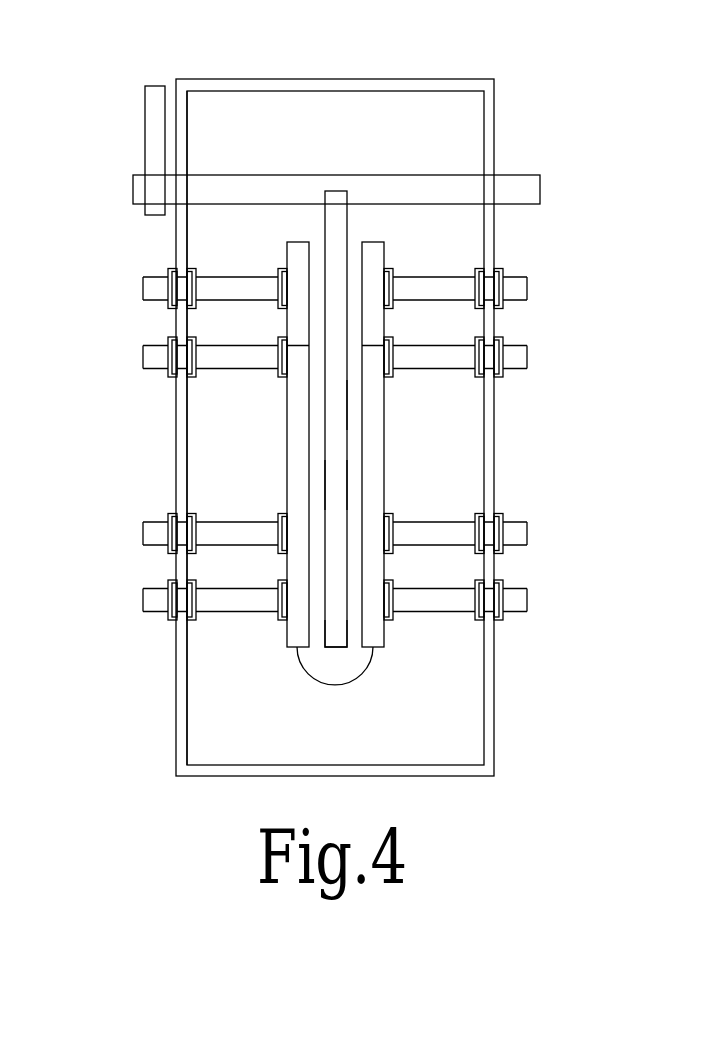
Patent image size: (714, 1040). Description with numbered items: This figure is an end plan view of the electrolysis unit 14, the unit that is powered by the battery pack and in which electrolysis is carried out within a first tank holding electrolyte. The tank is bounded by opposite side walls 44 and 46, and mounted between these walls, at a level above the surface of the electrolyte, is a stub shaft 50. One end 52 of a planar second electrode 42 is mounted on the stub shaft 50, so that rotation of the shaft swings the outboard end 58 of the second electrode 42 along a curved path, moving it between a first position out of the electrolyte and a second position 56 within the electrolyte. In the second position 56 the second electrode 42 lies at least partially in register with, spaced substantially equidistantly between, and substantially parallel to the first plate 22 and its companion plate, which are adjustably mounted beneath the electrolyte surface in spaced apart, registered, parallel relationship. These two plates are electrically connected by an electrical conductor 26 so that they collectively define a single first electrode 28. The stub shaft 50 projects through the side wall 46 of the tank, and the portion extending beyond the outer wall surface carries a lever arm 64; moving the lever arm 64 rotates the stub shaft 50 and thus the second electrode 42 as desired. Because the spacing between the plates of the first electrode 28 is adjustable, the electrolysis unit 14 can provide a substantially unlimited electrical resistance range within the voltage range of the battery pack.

The electrolysis unit 14 is at (406, 75).
The side wall 44 is at (484, 150).
The side wall 46 is at (188, 117).
The lever arm 64 is at (152, 136).
The stub shaft 50 is at (251, 175).
The end of the second electrode 52 is at (333, 227).
The first plate 22 is at (297, 432).
The first electrode 28 is at (371, 425).
The second position 56 is at (349, 402).
The second electrode 42 is at (337, 484).
The outboard end 58 is at (335, 631).
The electrical conductor 26 is at (335, 685).